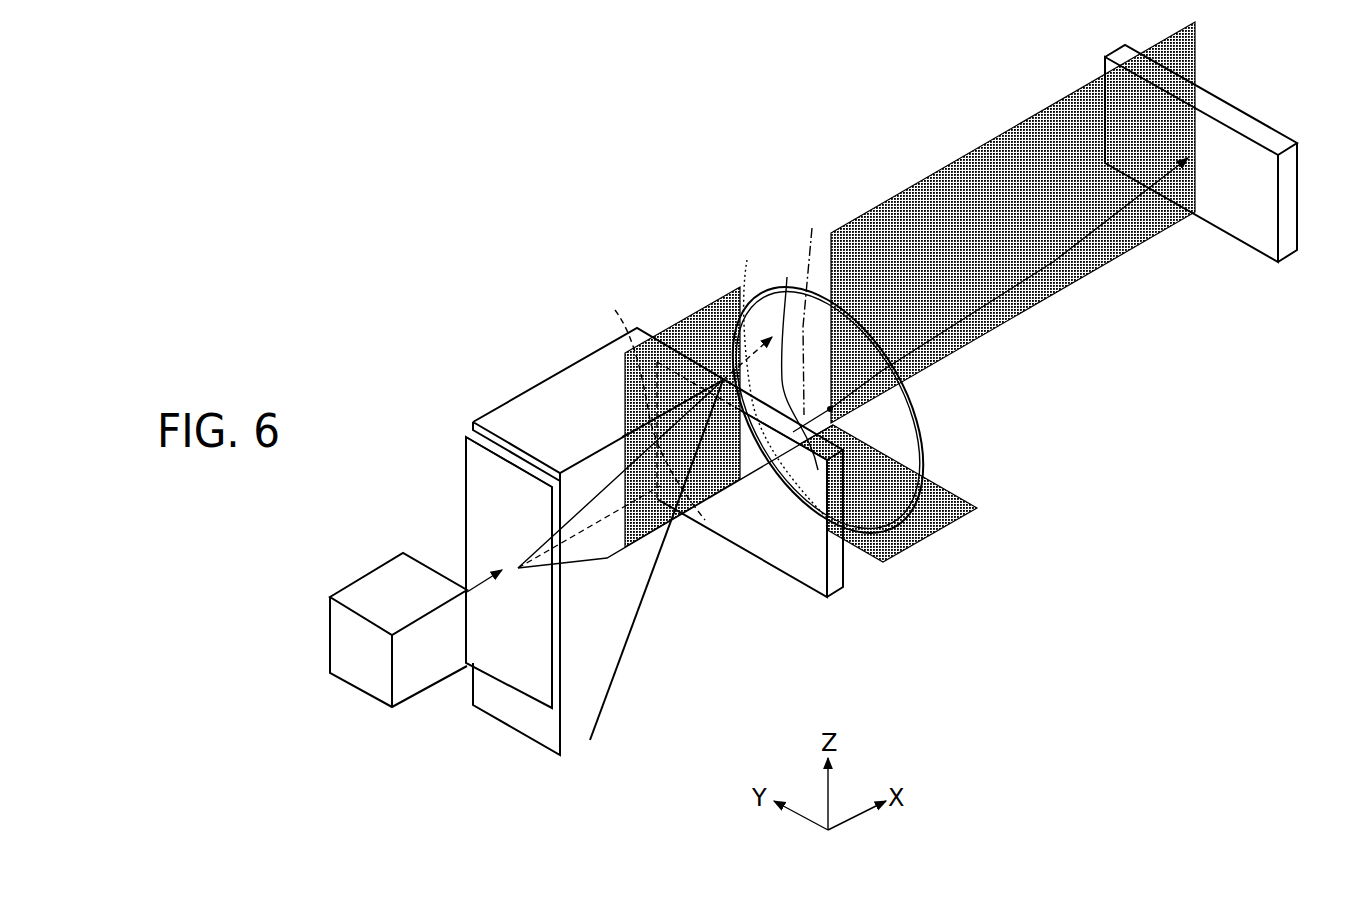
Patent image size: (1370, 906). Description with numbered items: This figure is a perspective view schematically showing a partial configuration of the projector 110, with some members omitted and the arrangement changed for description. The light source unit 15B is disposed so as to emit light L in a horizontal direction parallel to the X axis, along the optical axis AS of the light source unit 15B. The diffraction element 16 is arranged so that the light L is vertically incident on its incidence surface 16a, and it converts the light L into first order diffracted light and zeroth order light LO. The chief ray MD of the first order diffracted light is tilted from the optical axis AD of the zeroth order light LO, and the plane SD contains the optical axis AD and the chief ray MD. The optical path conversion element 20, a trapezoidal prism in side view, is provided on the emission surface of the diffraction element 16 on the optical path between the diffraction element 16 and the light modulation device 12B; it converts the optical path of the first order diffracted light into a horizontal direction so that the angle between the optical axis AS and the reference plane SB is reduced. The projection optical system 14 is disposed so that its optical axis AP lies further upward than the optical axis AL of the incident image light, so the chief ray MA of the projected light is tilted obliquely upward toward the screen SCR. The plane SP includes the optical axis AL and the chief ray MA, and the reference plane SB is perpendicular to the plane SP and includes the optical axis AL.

The projector 110 is at (763, 170).
The light source unit 15B is at (418, 688).
The diffraction element 16 is at (487, 660).
The incidence surface 16a is at (517, 666).
The optical path conversion element 20 is at (572, 712).
The light modulation device 12B is at (837, 582).
The projection optical system 14 is at (913, 437).
The screen SCR is at (1263, 134).
The plane SP is at (873, 234).
The reference plane SB is at (937, 520).
The plane SD is at (700, 323).
The optical axis of the 0-th order light AD is at (653, 402).
The 0-th order light LO is at (776, 375).
The optical axis of the image light AL is at (794, 359).
The optical axis of the projection optical system AP is at (814, 308).
The chief ray of the projected light MA is at (1053, 265).
The chief ray of the first order diffracted light MD is at (698, 505).
The optical axis of the light source unit AS is at (473, 565).
The light L is at (478, 590).